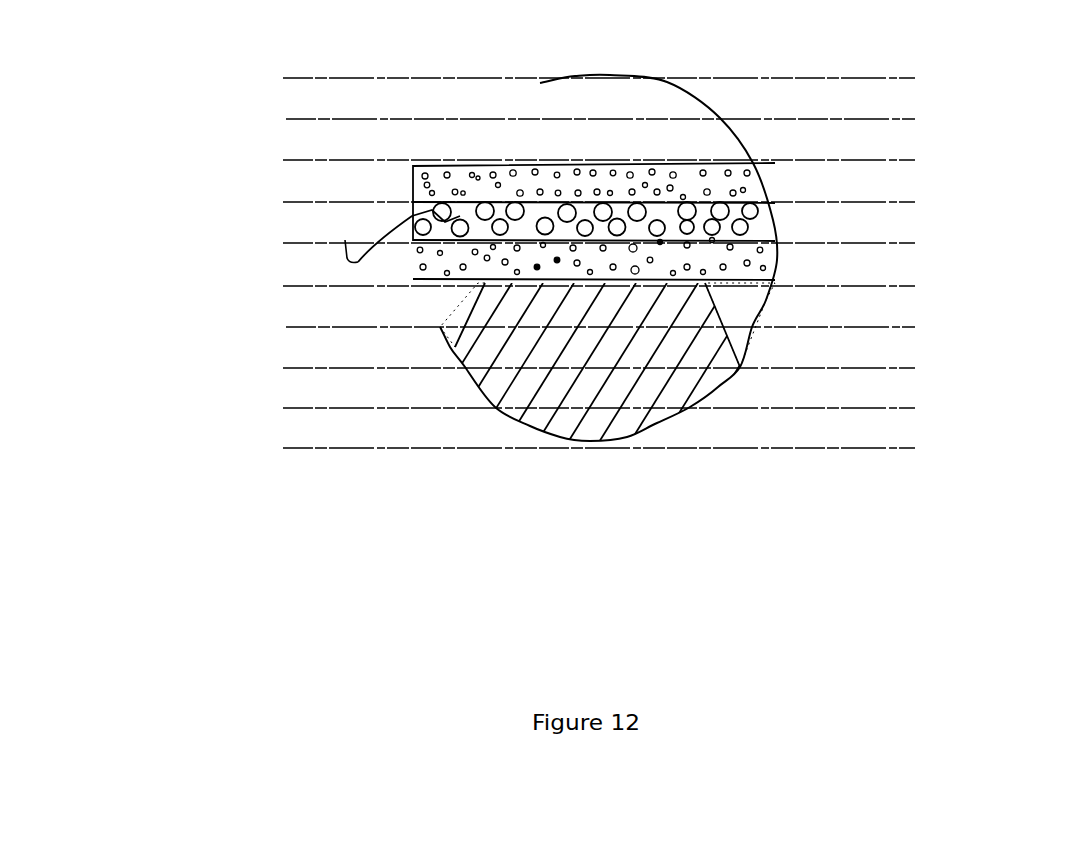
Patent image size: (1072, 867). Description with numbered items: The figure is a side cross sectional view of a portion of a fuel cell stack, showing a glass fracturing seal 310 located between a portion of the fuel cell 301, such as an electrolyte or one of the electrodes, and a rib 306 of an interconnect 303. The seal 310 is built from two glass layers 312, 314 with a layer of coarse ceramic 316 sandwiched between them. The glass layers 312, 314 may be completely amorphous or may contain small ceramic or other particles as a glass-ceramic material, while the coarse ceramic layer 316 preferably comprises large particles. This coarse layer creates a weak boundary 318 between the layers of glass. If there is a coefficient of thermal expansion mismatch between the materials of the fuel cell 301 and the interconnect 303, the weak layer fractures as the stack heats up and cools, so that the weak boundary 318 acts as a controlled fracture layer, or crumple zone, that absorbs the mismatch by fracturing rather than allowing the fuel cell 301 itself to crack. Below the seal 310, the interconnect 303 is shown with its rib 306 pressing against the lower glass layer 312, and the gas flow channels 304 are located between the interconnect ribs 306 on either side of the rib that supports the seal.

The fuel cell 301 is at (537, 96).
The interconnect 303 is at (588, 441).
The gas flow channels 304 is at (452, 312).
The rib 306 is at (660, 422).
The glass fracturing seal 310 is at (676, 204).
The glass layer 312 is at (670, 280).
The glass layer 314 is at (487, 109).
The coarse ceramic layer 316 is at (770, 216).
The weak boundary 318 is at (376, 206).